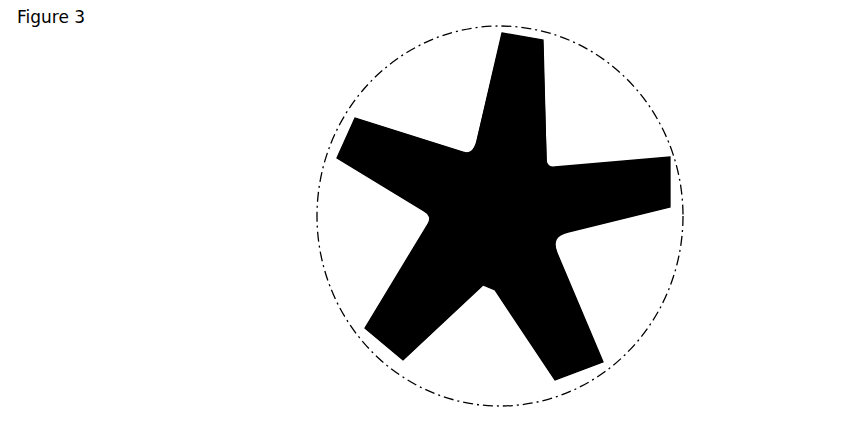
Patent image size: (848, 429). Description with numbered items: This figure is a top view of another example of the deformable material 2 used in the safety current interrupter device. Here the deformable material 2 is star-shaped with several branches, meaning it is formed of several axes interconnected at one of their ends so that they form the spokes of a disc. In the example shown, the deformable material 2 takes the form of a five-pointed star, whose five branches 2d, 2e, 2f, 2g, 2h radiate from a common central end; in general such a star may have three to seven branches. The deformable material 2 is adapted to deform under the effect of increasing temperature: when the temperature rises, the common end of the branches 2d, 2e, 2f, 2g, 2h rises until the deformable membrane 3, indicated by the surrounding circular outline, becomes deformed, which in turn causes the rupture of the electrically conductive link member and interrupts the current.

The deformable material 2 is at (446, 113).
The branch of the five-pointed star 2d is at (551, 49).
The branch of the five-pointed star 2e is at (679, 189).
The branch of the five-pointed star 2f is at (610, 350).
The branch of the five-pointed star 2g is at (368, 312).
The branch of the five-pointed star 2h is at (353, 174).
The deformable membrane 3 is at (676, 275).